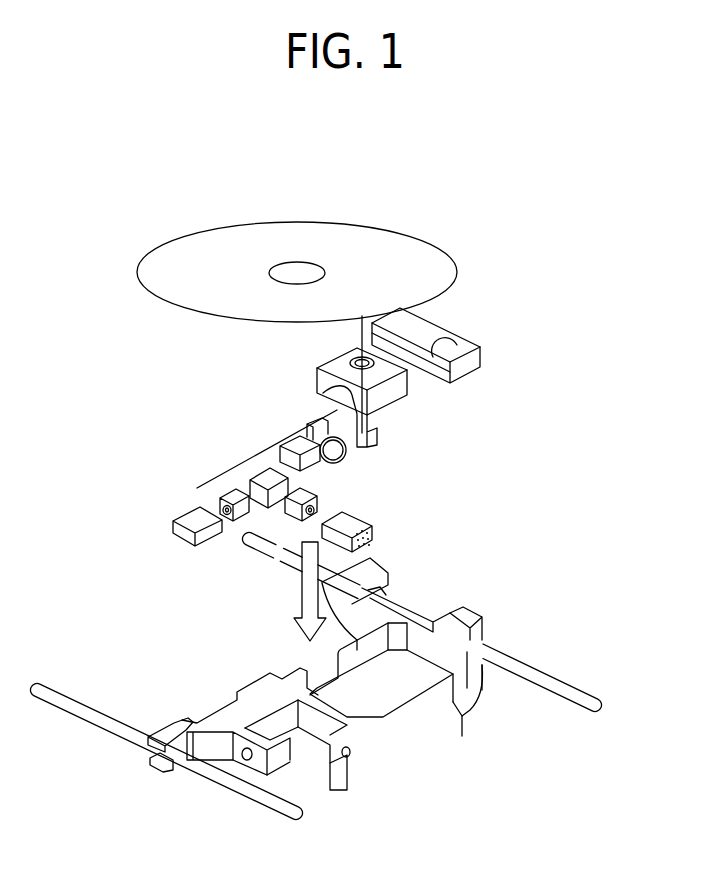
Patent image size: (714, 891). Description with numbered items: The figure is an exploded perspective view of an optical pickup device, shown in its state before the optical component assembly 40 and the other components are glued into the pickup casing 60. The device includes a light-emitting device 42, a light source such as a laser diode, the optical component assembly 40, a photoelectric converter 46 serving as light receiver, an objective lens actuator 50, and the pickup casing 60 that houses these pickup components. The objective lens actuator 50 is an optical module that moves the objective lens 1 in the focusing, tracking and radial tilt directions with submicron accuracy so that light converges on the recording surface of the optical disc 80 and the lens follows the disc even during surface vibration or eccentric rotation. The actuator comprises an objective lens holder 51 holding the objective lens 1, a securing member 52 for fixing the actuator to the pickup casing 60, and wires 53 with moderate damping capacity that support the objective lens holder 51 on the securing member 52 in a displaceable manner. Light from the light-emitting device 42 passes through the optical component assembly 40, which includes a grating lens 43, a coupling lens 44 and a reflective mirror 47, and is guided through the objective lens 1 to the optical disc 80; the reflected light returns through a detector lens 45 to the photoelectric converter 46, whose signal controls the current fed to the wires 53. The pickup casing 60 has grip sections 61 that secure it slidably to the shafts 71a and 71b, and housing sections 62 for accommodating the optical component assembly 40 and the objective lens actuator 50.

The objective lens 1 is at (335, 393).
The optical component assembly 40 is at (257, 455).
The light-emitting device 42 is at (373, 526).
The grating lens 43 is at (318, 498).
The coupling lens 44 is at (350, 449).
The detector lens 45 is at (222, 495).
The photoelectric converter 46 is at (195, 513).
The reflective mirror 47 is at (378, 430).
The objective lens actuator 50 is at (467, 363).
The objective lens holder 51 is at (400, 394).
The securing member 52 is at (465, 349).
The wires 53 is at (455, 333).
The pickup casing 60 is at (329, 683).
The grip sections 61 is at (452, 606).
The housing sections 62 is at (413, 688).
The shaft 71a is at (262, 815).
The shaft 71b is at (580, 685).
The optical disc 80 is at (379, 246).